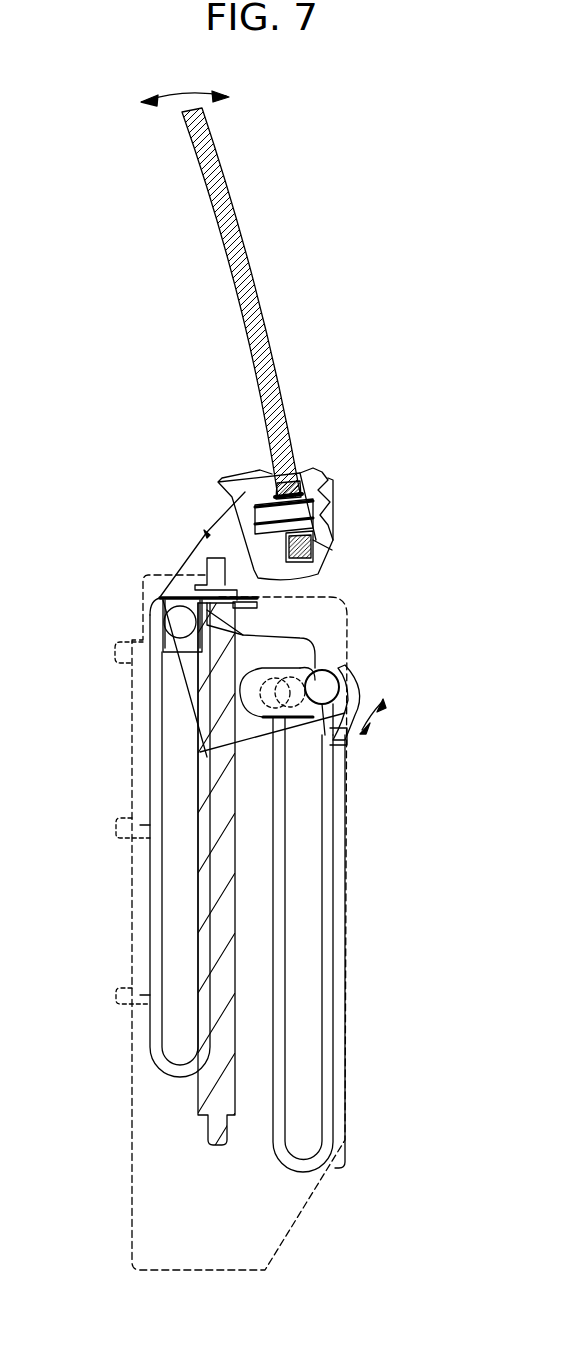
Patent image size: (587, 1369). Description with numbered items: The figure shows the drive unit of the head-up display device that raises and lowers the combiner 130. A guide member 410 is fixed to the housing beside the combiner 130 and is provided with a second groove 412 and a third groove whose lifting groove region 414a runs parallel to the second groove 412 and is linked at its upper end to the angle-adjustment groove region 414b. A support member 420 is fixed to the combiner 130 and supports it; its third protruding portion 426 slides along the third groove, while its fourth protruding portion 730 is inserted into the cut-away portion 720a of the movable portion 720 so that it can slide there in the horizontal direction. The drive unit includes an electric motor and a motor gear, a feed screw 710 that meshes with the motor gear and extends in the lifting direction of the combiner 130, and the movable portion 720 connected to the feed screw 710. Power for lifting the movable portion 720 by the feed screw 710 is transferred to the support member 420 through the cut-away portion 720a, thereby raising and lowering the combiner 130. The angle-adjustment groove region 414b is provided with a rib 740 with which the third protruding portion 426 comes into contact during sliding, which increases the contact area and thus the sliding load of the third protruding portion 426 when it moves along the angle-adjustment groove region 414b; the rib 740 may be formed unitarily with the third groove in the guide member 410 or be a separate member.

The combiner 130 is at (265, 313).
The support member 420 is at (190, 568).
The movable portion 720 is at (280, 646).
The fourth protruding portion 730 is at (287, 680).
The third protruding portion 426 is at (313, 658).
The rib 740 is at (362, 677).
The angle-adjustment groove region 414b is at (373, 726).
The cut-away portion 720a is at (200, 752).
The second groove 412 is at (175, 785).
The lifting groove region 414a is at (345, 878).
The feed screw 710 is at (212, 1102).
The guide member 410 is at (130, 907).